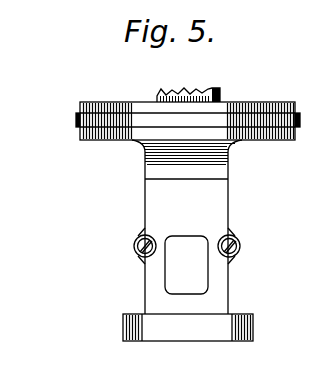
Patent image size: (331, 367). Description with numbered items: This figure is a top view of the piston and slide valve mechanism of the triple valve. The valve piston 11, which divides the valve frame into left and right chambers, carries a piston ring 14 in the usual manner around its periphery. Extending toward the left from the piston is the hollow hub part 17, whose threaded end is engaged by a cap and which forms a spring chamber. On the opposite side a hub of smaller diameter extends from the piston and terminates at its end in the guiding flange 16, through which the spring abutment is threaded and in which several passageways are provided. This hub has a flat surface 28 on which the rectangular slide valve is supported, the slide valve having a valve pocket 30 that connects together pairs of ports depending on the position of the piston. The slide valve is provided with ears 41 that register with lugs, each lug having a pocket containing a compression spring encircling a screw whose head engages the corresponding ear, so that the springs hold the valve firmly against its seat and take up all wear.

The valve piston 11 is at (137, 105).
The hub part 17 is at (215, 88).
The piston ring 14 is at (77, 119).
The flat surface 28 is at (217, 200).
The valve pocket 30 is at (170, 278).
The ears 41 is at (135, 252).
The guiding flange 16 is at (248, 325).